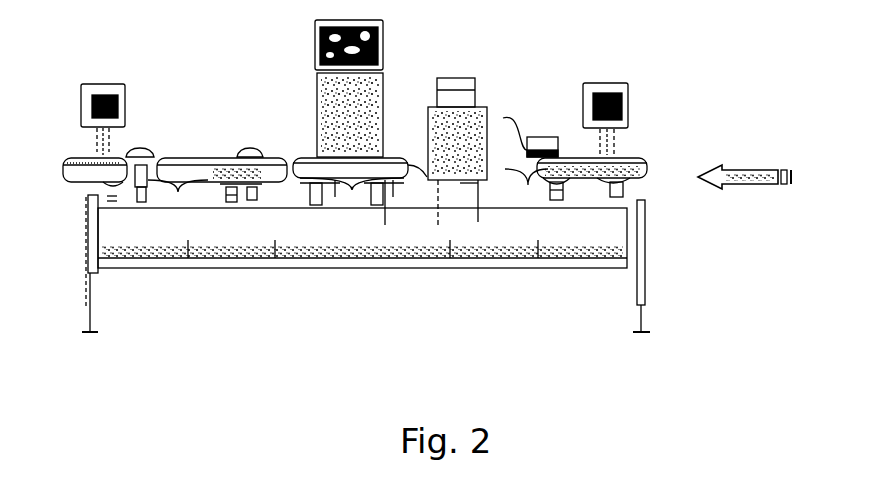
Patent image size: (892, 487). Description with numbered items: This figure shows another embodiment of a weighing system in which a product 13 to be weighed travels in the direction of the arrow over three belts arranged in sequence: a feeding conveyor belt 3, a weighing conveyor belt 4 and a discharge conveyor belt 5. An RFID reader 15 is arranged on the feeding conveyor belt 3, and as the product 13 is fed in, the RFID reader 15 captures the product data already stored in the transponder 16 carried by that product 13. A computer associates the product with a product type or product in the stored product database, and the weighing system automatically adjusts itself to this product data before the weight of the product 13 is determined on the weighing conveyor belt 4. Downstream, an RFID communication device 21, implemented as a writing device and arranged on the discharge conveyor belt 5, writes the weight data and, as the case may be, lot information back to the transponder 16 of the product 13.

The feeding conveyor belt 3 is at (528, 185).
The weighing conveyor belt 4 is at (352, 190).
The discharge conveyor belt 5 is at (178, 192).
The product 13 is at (472, 129).
The RFID reader 15 is at (626, 93).
The transponder 16 is at (543, 137).
The RFID communication device 21 is at (123, 96).